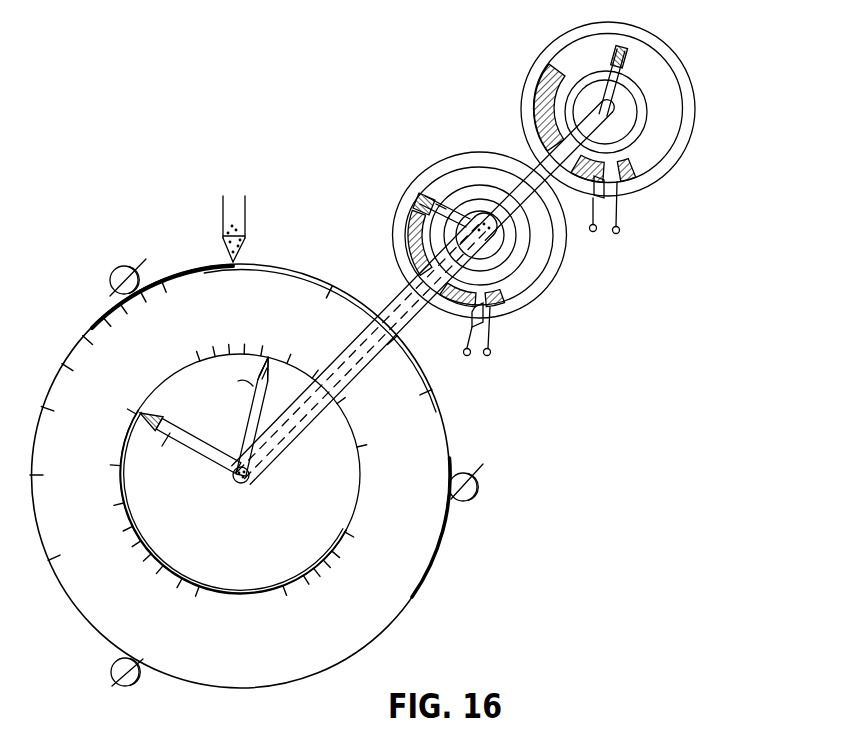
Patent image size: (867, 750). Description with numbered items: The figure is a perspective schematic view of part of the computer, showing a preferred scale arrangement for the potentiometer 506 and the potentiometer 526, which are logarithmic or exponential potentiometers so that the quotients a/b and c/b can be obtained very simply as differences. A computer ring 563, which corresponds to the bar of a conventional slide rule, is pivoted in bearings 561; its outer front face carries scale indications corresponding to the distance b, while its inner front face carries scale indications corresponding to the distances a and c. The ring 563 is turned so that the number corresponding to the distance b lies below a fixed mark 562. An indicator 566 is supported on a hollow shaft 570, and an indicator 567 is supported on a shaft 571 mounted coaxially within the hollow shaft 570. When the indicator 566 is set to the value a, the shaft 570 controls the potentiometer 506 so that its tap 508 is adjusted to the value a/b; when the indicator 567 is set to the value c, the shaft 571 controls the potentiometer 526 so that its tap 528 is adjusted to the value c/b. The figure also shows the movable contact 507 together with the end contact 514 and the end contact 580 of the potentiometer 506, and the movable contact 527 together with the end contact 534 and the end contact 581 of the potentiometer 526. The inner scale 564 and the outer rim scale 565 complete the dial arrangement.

The potentiometer 506 is at (402, 213).
The movable contact 507 is at (543, 258).
The tap 508 is at (440, 206).
The end contact 514 is at (468, 356).
The potentiometer 526 is at (533, 82).
The movable contact 527 is at (662, 65).
The tap 528 is at (582, 73).
The end contact 534 is at (593, 232).
The bearings 561 is at (112, 268).
The mark 562 is at (248, 226).
The computer ring 563 is at (383, 607).
The inner dial scale 564 is at (367, 493).
The outer rim scale 565 is at (195, 268).
The indicator 566 is at (195, 448).
The indicator 567 is at (253, 418).
The hollow shaft 570 is at (403, 230).
The shaft 571 is at (537, 160).
The end contact 580 is at (487, 356).
The end contact 581 is at (617, 234).